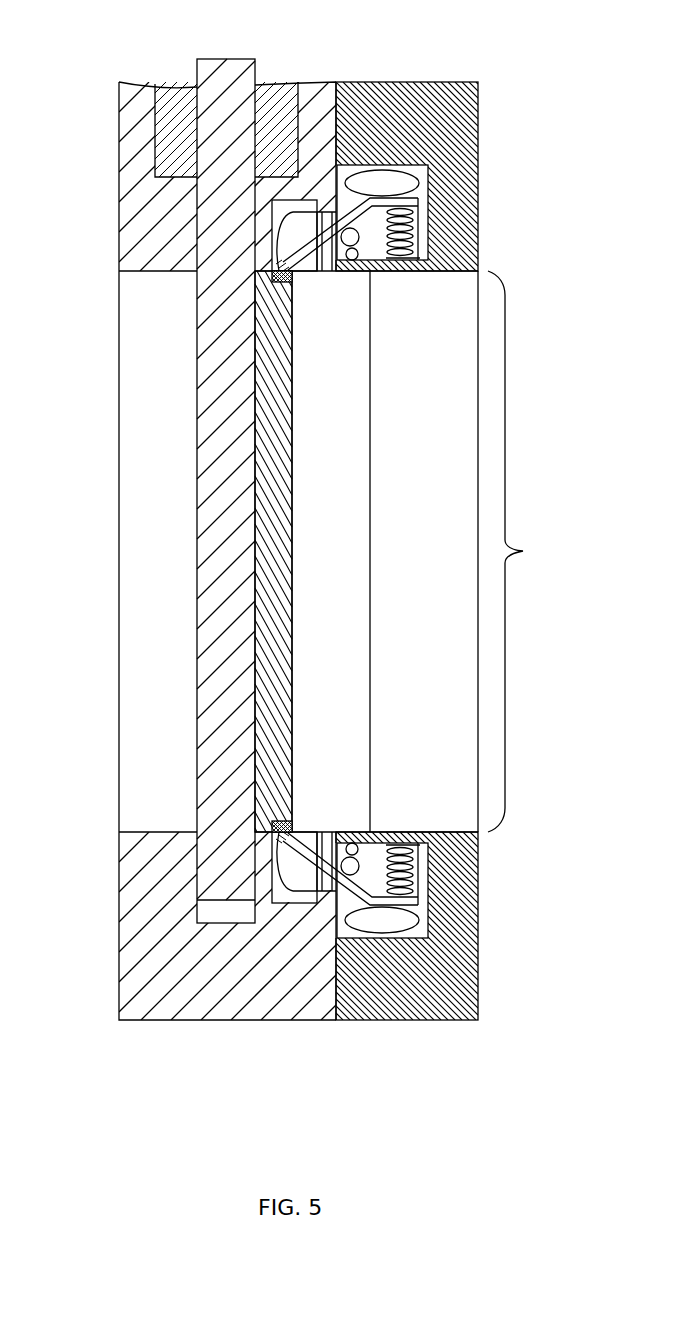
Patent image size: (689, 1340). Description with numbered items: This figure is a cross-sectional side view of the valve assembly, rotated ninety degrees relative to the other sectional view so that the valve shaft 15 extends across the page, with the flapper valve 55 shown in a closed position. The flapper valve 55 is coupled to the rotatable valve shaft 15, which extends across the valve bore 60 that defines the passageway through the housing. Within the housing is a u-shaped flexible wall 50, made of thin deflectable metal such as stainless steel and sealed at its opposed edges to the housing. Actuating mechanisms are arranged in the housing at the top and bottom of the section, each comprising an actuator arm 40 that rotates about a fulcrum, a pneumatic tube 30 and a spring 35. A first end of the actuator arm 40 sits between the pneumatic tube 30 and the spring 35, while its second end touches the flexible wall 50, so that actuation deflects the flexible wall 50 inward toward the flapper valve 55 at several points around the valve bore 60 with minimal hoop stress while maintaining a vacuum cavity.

The valve shaft 15 is at (236, 60).
The pneumatic tube 30 is at (420, 920).
The spring 35 is at (418, 875).
The actuator arm 40 is at (420, 900).
The flexible wall 50 is at (292, 213).
The flapper valve 55 is at (255, 515).
The valve bore 60 is at (336, 551).